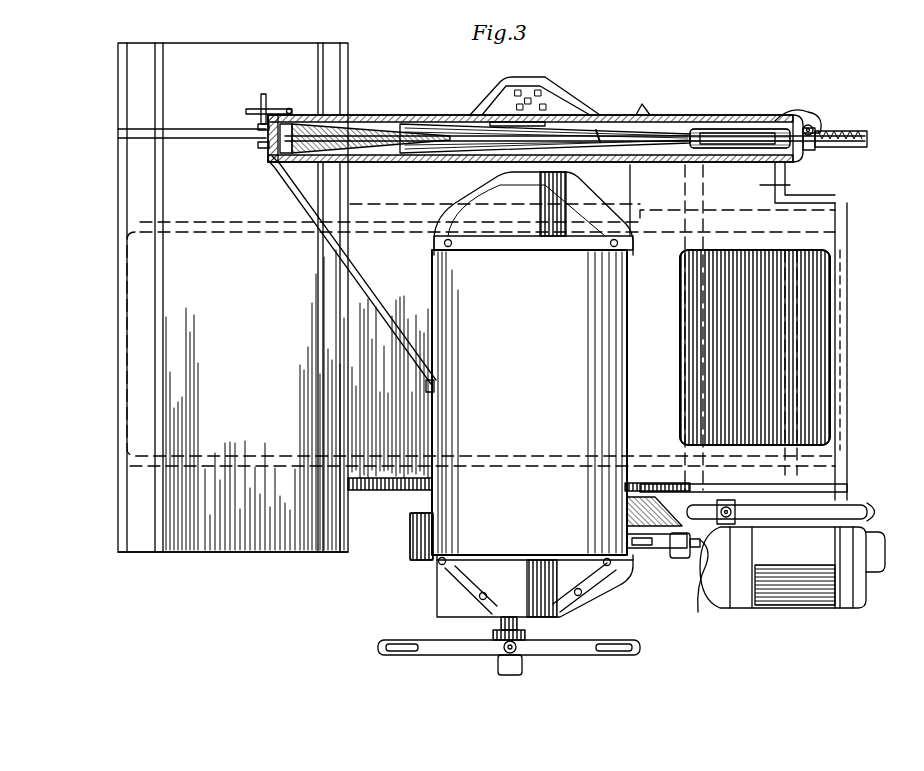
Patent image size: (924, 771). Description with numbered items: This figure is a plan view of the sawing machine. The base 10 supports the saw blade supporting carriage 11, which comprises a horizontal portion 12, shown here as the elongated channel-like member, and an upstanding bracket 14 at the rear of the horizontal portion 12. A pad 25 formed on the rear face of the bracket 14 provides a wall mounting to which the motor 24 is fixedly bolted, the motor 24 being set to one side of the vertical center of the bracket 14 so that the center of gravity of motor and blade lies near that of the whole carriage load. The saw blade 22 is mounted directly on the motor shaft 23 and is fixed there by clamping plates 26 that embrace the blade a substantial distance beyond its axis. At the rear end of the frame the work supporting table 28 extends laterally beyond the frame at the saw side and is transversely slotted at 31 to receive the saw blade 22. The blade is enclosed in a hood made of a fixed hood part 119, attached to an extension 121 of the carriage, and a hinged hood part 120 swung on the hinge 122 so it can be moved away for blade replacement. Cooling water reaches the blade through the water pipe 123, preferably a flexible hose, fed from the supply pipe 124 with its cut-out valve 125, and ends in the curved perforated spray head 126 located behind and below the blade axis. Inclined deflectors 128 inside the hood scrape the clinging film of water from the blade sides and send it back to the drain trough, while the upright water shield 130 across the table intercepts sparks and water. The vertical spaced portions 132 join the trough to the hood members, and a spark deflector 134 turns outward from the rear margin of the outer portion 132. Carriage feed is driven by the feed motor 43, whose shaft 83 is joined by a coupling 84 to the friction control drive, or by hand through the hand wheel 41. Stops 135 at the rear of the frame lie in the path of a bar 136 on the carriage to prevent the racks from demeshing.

The base 10 is at (846, 232).
The saw blade supporting carriage 11 is at (832, 206).
The horizontal portion 12 is at (275, 297).
The upstanding bracket 14 is at (660, 362).
The saw blade 22 is at (724, 134).
The motor shaft 23 is at (478, 160).
The motor 24 is at (402, 512).
The pad 25 is at (636, 550).
The clamping plates 26 is at (596, 132).
The work supporting table 28 is at (282, 548).
The transverse slot 31 is at (194, 132).
The hand wheel 41 is at (551, 658).
The feed motor 43 is at (856, 584).
The feed motor shaft 83 is at (705, 590).
The coupling 84 is at (682, 560).
The fixed hood part 119 is at (455, 126).
The hinged hood part 120 is at (426, 160).
The carriage extension 121 is at (796, 185).
The hinge 122 is at (824, 128).
The water pipe 123 is at (868, 140).
The supply pipe 124 is at (692, 216).
The cut-out valve 125 is at (735, 522).
The spray head 126 is at (765, 146).
The deflectors 128 is at (350, 124).
The water shield 130 is at (318, 275).
The vertical spaced portions 132 is at (755, 122).
The spark deflector 134 is at (648, 118).
The stops 135 is at (822, 254).
The bar 136 is at (800, 420).